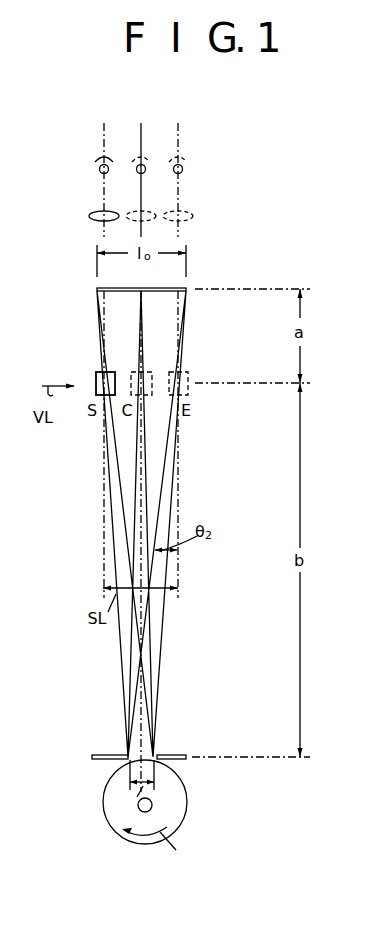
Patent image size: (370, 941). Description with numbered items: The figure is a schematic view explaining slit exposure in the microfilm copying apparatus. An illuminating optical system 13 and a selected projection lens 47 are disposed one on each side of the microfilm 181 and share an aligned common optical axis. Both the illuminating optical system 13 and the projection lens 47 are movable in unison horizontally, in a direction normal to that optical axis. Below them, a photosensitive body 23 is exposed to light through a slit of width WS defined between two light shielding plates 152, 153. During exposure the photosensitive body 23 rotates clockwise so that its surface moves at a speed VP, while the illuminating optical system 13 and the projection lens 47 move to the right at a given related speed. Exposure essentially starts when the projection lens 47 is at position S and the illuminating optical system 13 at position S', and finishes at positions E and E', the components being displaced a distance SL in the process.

The illuminating optical system 13 is at (207, 175).
The microfilm 181 is at (172, 288).
The projection lens 47 is at (97, 376).
The light shielding plate 152 is at (113, 755).
The light shielding plate 153 is at (168, 755).
The photosensitive body 23 is at (190, 805).